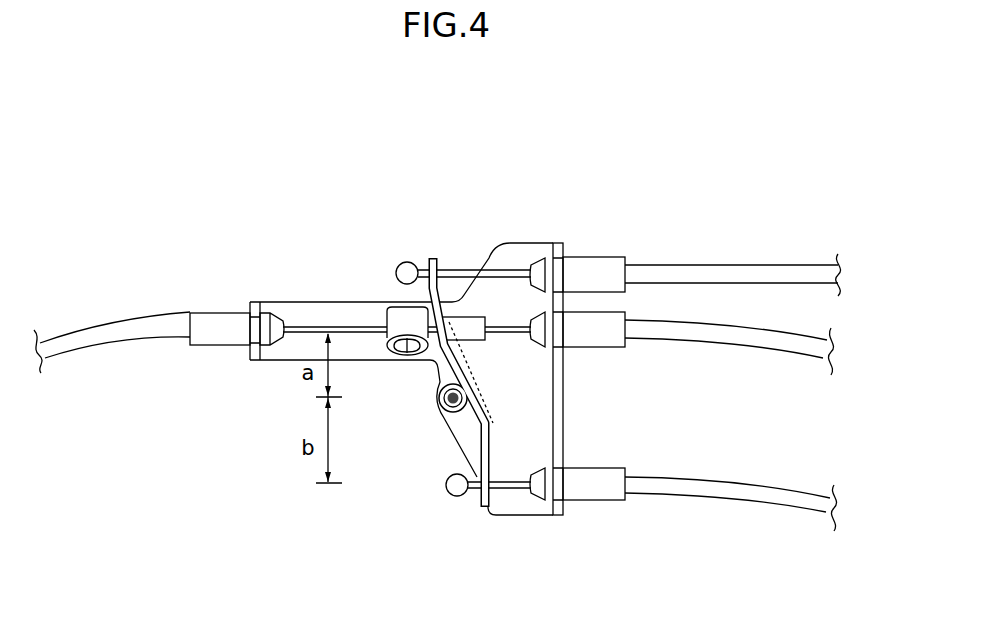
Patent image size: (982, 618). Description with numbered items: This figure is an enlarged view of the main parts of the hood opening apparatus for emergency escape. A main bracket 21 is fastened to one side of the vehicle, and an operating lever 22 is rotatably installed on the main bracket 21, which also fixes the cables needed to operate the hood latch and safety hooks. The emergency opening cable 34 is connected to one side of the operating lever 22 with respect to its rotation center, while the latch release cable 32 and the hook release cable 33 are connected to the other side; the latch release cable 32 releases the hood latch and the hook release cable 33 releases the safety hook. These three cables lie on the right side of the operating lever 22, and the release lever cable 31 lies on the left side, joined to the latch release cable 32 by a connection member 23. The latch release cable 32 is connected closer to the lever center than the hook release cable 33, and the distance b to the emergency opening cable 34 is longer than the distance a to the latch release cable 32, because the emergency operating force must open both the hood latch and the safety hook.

The main bracket 21 is at (533, 408).
The operating lever 22 is at (487, 447).
The connection member 23 is at (395, 318).
The release lever cable 31 is at (117, 330).
The latch release cable 32 is at (740, 333).
The hook release cable 33 is at (735, 273).
The emergency opening cable 34 is at (742, 488).